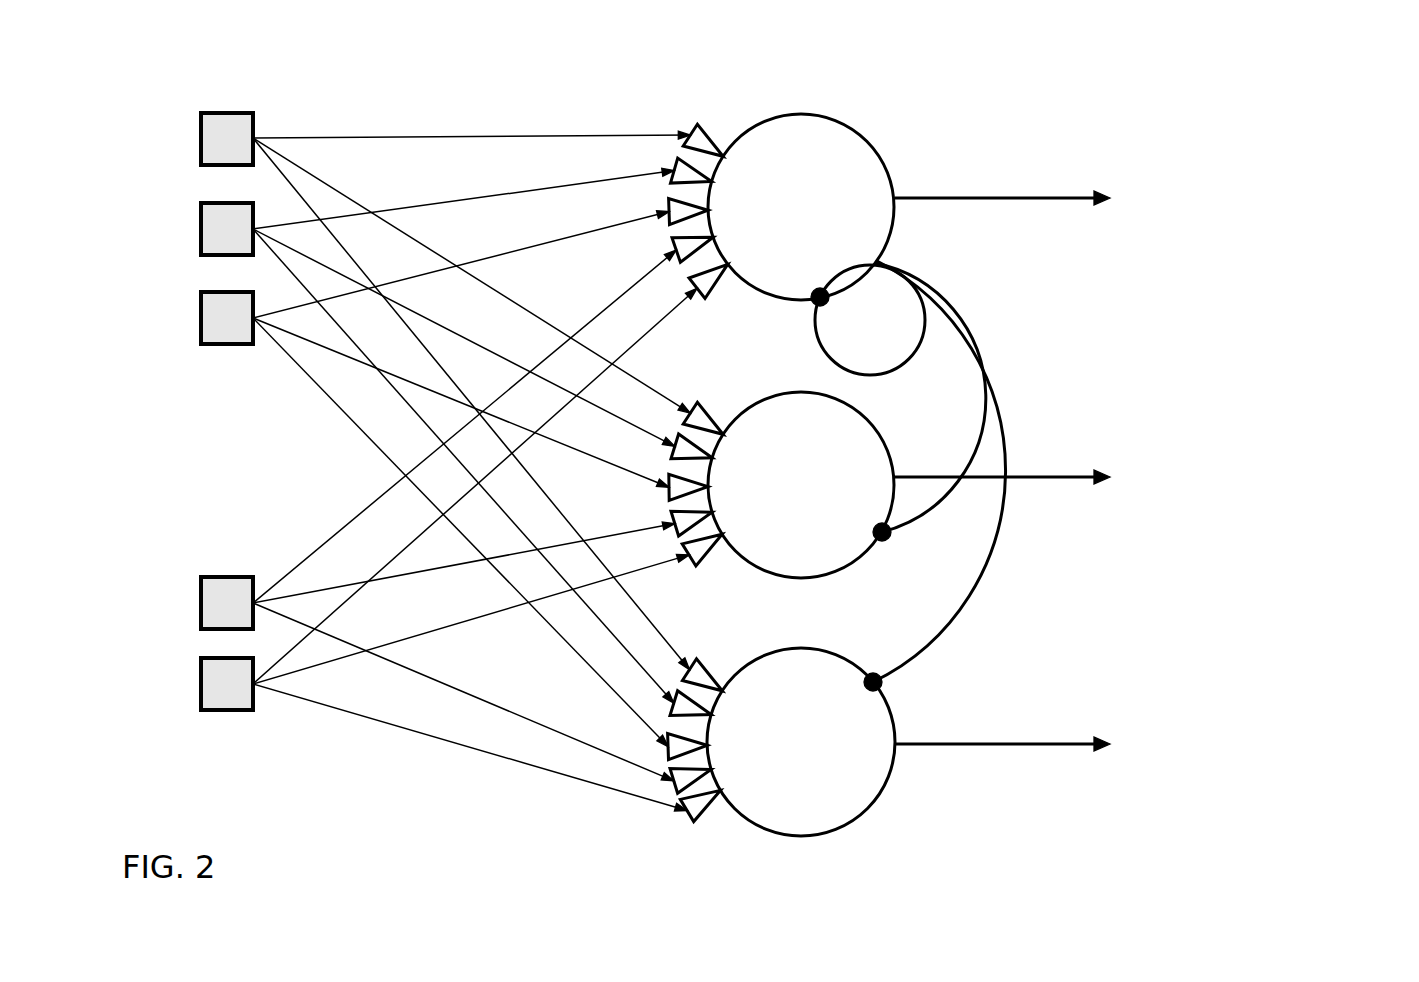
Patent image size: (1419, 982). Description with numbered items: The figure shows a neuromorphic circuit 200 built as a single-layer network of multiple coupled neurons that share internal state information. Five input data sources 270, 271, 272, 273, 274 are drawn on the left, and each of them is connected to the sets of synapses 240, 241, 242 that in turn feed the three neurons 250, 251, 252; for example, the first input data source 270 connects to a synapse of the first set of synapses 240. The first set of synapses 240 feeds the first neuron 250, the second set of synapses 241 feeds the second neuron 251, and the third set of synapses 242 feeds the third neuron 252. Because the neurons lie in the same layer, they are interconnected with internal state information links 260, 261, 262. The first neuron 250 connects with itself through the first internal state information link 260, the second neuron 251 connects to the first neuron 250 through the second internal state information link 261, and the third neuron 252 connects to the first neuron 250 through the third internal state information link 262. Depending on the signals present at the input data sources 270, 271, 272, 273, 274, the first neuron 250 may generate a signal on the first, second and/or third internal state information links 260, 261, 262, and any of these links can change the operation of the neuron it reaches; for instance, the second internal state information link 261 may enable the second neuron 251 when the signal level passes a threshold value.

The neuromorphic circuit 200 is at (1230, 283).
The first set of synapses 240 is at (703, 125).
The second set of synapses 241 is at (708, 560).
The third set of synapses 242 is at (708, 812).
The first neuron 250 is at (886, 153).
The second neuron 251 is at (770, 393).
The third neuron 252 is at (897, 716).
The first internal state information link 260 is at (817, 352).
The second internal state information link 261 is at (919, 536).
The third internal state information link 262 is at (993, 563).
The first input data source 270 is at (200, 138).
The second input data source 271 is at (200, 229).
The third input data source 272 is at (200, 318).
The fourth input data source 273 is at (200, 603).
The fifth input data source 274 is at (200, 684).